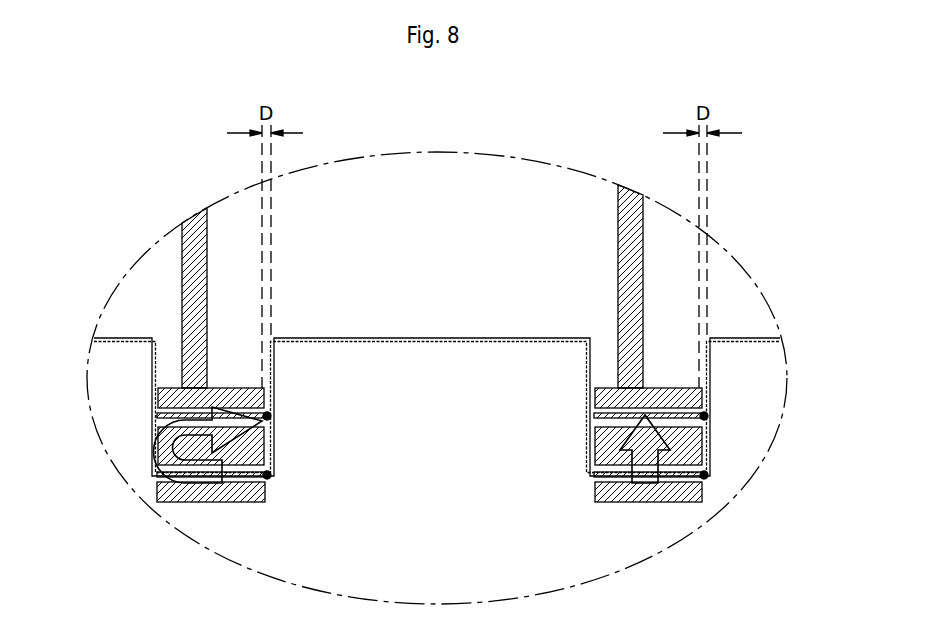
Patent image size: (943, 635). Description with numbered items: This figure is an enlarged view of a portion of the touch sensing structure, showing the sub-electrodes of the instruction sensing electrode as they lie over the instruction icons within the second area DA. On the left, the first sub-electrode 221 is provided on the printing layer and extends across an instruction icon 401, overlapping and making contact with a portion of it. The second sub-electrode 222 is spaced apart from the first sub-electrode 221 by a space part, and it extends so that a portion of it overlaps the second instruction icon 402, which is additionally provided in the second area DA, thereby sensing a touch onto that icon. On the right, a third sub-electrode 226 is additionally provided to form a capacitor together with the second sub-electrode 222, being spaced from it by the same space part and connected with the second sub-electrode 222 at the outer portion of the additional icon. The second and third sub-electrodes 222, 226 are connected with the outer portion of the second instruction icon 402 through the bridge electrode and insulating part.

The first sub-electrode 221 is at (162, 398).
The second sub-electrode 222 is at (275, 427).
The third sub-electrode 226 is at (712, 405).
The first fan 401 is at (196, 503).
The second instruction icon 402 is at (640, 503).
The second area DA is at (479, 187).